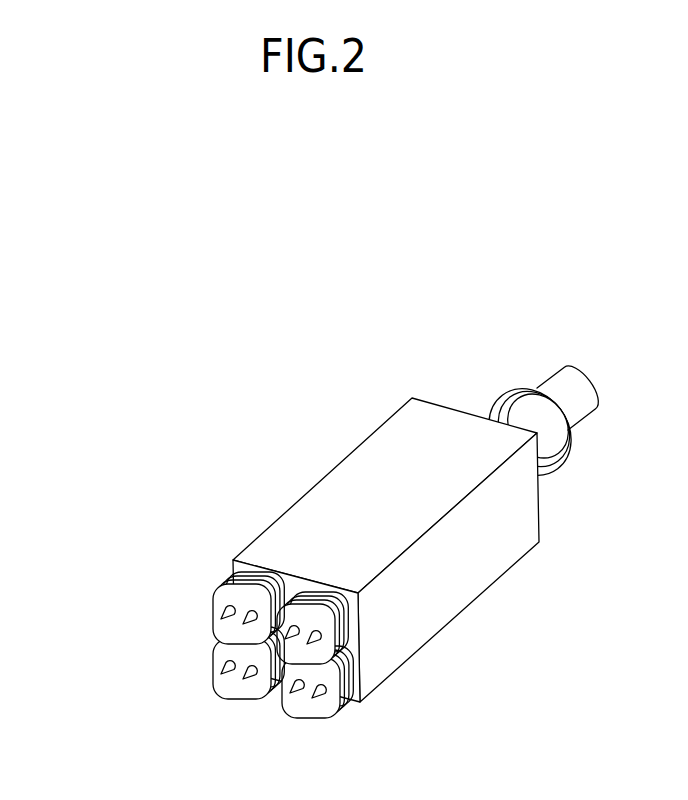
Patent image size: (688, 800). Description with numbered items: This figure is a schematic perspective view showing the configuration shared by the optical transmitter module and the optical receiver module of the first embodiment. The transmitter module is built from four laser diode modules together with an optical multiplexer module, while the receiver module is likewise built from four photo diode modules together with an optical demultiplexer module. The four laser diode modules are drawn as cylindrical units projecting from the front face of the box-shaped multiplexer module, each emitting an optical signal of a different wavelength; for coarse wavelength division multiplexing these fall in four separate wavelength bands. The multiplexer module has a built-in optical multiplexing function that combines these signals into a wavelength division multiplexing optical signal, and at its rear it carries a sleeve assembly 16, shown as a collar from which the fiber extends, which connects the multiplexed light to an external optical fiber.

The sleeve assembly 16 is at (510, 387).